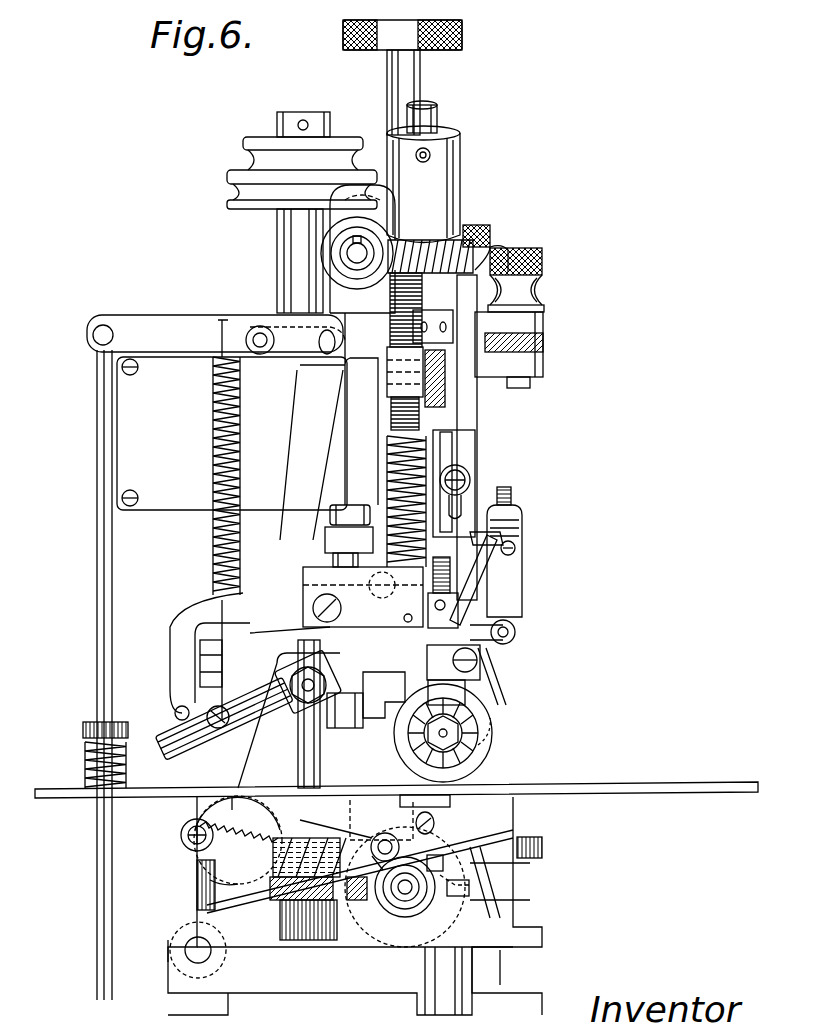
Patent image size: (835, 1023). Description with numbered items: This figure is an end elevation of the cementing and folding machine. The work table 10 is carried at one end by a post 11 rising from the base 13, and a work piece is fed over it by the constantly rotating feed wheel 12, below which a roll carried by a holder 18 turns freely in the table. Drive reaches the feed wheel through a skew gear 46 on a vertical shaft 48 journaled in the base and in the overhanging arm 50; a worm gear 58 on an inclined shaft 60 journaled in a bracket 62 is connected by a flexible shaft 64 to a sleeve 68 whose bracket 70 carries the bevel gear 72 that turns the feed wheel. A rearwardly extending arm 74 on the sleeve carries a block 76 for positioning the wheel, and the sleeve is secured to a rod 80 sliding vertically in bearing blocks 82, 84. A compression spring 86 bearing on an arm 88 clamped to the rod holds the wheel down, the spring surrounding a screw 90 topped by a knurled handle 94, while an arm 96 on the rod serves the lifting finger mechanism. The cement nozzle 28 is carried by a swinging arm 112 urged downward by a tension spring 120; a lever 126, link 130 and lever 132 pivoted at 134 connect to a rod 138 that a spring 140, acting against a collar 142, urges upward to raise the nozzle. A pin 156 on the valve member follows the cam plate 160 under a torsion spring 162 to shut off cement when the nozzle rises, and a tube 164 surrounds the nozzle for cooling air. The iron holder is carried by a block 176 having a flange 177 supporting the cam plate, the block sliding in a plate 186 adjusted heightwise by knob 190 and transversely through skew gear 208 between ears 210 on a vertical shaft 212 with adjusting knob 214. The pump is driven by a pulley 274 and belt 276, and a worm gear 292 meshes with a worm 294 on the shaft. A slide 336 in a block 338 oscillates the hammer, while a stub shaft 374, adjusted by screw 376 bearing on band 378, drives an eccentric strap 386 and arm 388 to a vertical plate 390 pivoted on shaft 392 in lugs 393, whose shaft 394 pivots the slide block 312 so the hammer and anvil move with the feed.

The work table 10 is at (598, 782).
The post 11 is at (527, 840).
The feed wheel 12 is at (492, 735).
The base 13 is at (530, 975).
The holder 18 is at (340, 728).
The nozzle 28 is at (496, 720).
The skew gear 46 is at (300, 900).
The vertical shaft 48 is at (298, 770).
The overhanging arm 50 is at (378, 448).
The worm gear 58 is at (500, 247).
The inclined shaft 60 is at (437, 125).
The bracket 62 is at (460, 190).
The flexible shaft 64 is at (445, 395).
The sleeve 68 is at (515, 630).
The bracket 70 is at (465, 695).
The beveled gear 72 is at (475, 748).
The rearwardly extending arm 74 is at (485, 655).
The block 76 is at (380, 720).
The rod 80 is at (333, 560).
The bearing block 82 is at (325, 535).
The bearing block 84 is at (322, 640).
The compression spring 86 is at (477, 457).
The arm 88 is at (458, 600).
The screw 90 is at (423, 425).
The knurled handle 94 is at (462, 30).
The arm 96 is at (350, 505).
The swinging arm 112 is at (170, 745).
The tension spring 120 is at (213, 428).
The lever 126 is at (170, 668).
The link 130 is at (300, 448).
The lever 132 is at (150, 318).
The pivot 134 is at (255, 335).
The rod 138 is at (112, 597).
The spring 140 is at (90, 762).
The collar 142 is at (93, 724).
The arm 156 is at (515, 497).
The plate 160 is at (480, 570).
The torsion spring 162 is at (522, 532).
The tube 164 is at (490, 672).
The block 176 is at (470, 472).
The inturned flange 177 is at (455, 440).
The plate 186 is at (453, 368).
The knob 190 is at (480, 226).
The skew gear 208 is at (543, 343).
The ears 210 is at (543, 322).
The vertical shaft 212 is at (530, 383).
The adjusting knob 214 is at (542, 258).
The pulley 274 is at (262, 140).
The belt 276 is at (232, 172).
The worm gear 292 is at (240, 840).
The worm 294 is at (373, 790).
The slide block 312 is at (232, 790).
The slide 336 is at (495, 905).
The block 338 is at (470, 880).
The stub shaft 374 is at (405, 893).
The screw 376 is at (469, 893).
The band 378 is at (443, 863).
The eccentric strap 386 is at (398, 847).
The arm 388 is at (358, 925).
The vertical plate 390 is at (197, 880).
The shaft 392 is at (186, 958).
The lugs 393 is at (172, 935).
The shaft 394 is at (188, 845).